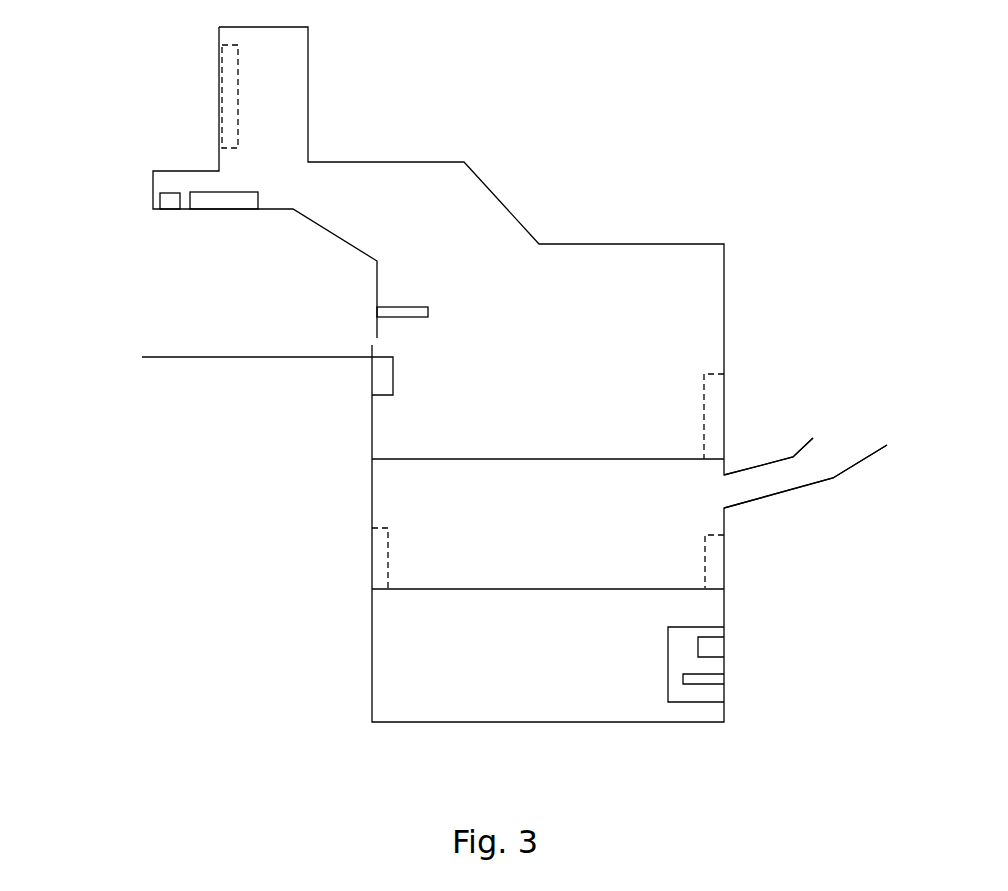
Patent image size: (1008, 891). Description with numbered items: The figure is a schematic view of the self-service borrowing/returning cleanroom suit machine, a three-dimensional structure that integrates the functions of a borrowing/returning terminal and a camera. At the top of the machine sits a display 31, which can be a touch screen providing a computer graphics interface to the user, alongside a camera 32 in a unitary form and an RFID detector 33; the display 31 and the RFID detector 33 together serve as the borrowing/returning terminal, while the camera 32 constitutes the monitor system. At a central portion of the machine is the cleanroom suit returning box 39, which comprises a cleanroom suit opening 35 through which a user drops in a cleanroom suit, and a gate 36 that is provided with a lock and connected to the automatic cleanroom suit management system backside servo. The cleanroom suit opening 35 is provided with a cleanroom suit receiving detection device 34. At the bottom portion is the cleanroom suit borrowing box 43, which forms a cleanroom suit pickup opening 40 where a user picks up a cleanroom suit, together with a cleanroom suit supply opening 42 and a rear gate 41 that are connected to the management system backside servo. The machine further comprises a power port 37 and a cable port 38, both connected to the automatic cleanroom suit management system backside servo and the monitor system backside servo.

The display 31 is at (229, 105).
The camera 32 is at (173, 208).
The RFID detector 33 is at (226, 198).
The cleanroom suit receiving detection device 34 is at (405, 311).
The cleanroom suit opening 35 is at (378, 343).
The gate 36 is at (713, 422).
The power port 37 is at (713, 647).
The cable port 38 is at (710, 680).
The cleanroom suit returning box 39 is at (523, 348).
The cleanroom suit pickup opening 40 is at (382, 537).
The rear gate 41 is at (713, 560).
The cleanroom suit supply opening 42 is at (757, 487).
The cleanroom suit borrowing box 43 is at (455, 563).